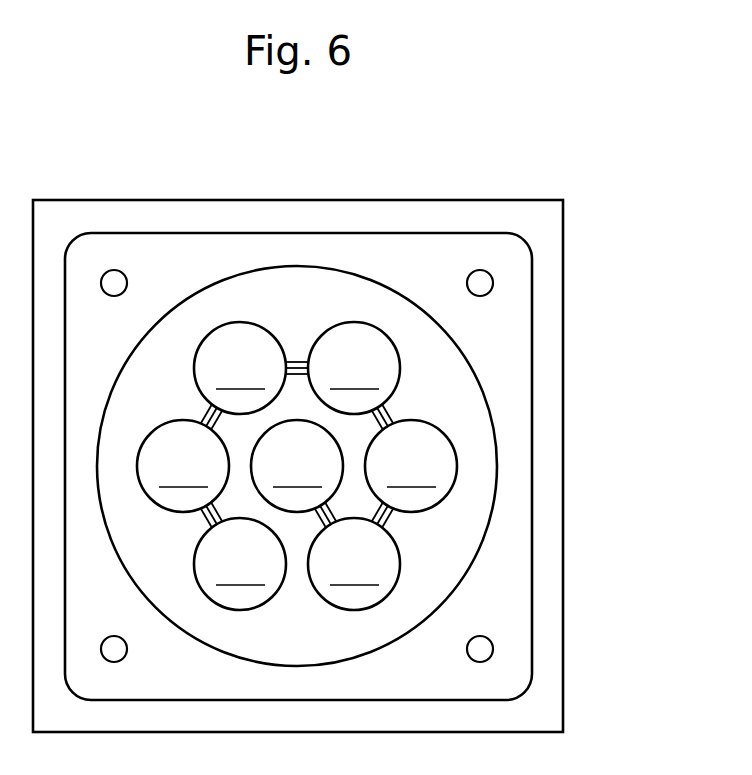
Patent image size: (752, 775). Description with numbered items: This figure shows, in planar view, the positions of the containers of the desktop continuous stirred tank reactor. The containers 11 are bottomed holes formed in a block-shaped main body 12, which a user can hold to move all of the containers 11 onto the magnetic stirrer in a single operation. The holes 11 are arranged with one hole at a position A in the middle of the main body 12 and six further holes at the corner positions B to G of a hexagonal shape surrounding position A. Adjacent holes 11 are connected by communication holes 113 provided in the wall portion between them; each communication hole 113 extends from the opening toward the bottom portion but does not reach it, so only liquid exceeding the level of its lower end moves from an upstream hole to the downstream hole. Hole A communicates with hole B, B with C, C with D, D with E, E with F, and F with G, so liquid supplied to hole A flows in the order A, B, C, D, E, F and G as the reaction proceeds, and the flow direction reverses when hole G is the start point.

The main body 12 is at (563, 200).
The containers 11 is at (402, 366).
The communication hole 113 is at (395, 523).